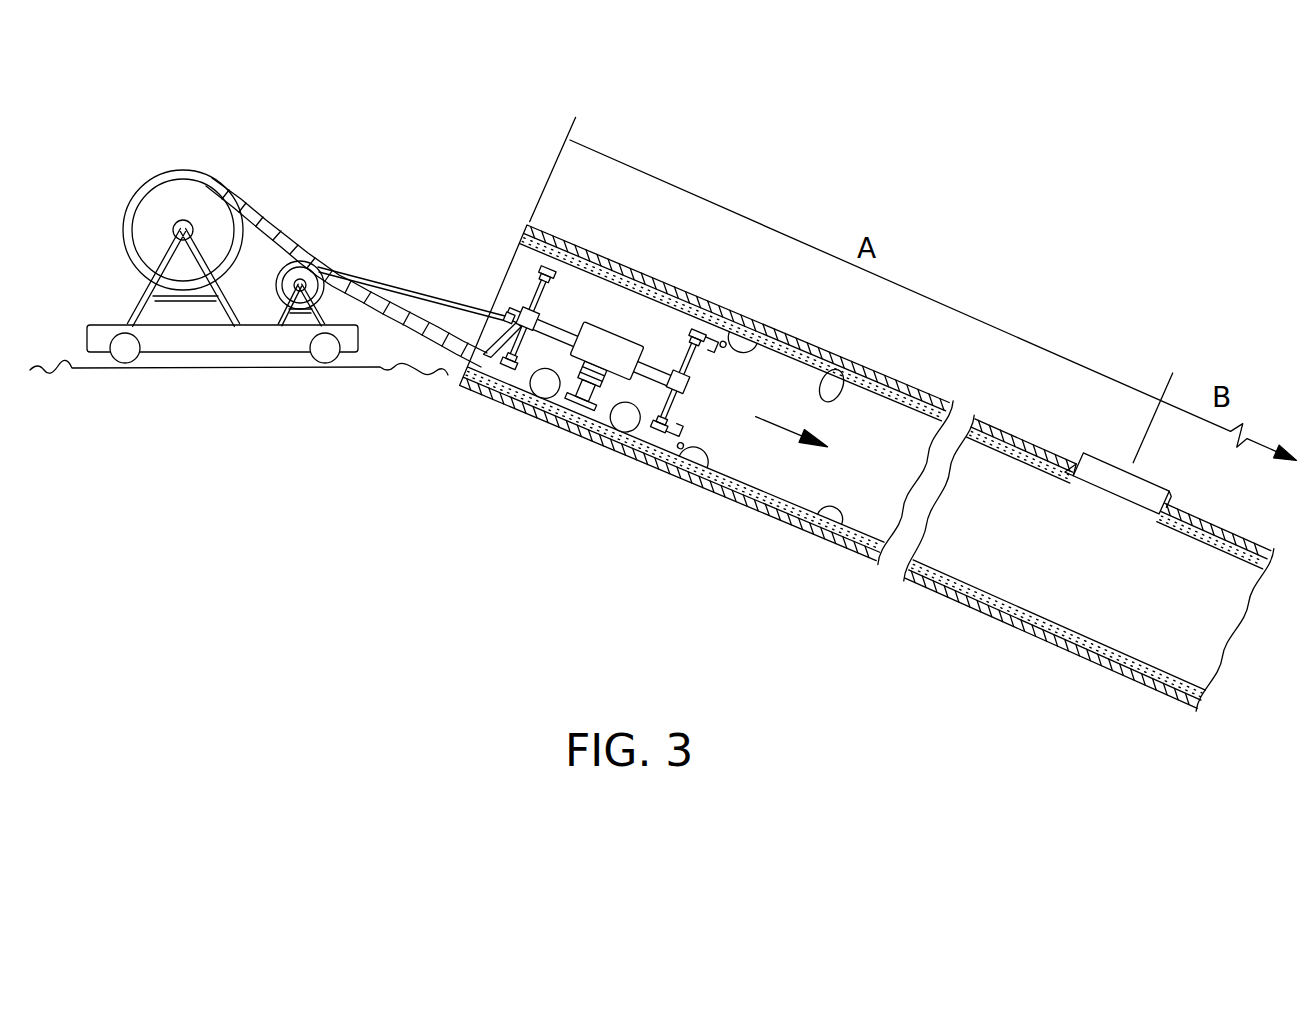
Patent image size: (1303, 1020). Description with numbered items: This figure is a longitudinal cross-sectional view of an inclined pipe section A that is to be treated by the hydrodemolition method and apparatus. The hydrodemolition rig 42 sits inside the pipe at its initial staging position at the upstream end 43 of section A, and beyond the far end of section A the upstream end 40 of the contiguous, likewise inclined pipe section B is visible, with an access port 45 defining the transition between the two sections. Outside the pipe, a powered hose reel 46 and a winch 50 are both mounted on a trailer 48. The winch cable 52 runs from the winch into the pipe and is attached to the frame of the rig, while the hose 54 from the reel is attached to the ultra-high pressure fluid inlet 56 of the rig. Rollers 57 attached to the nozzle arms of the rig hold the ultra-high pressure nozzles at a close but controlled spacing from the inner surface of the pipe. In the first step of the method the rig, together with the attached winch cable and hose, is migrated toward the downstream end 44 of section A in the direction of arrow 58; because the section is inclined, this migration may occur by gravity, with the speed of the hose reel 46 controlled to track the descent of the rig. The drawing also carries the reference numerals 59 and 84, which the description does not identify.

The upstream end of pipe section B 40 is at (1157, 560).
The hydrodemolition rig 42 is at (587, 395).
The upstream end of section A 43 is at (510, 253).
The downstream end of section A 44 is at (1047, 515).
The access port 45 is at (1085, 457).
The powered hose reel 46 is at (191, 169).
The trailer 48 is at (173, 338).
The winch 50 is at (272, 303).
The winch cable 52 is at (413, 283).
The hose 54 is at (310, 237).
The ultra-high pressure fluid inlet 56 is at (600, 398).
The rollers 57 is at (752, 342).
The arrow 58 is at (792, 433).
The wall feature 59 is at (837, 370).
The cable attachment 84 is at (503, 315).